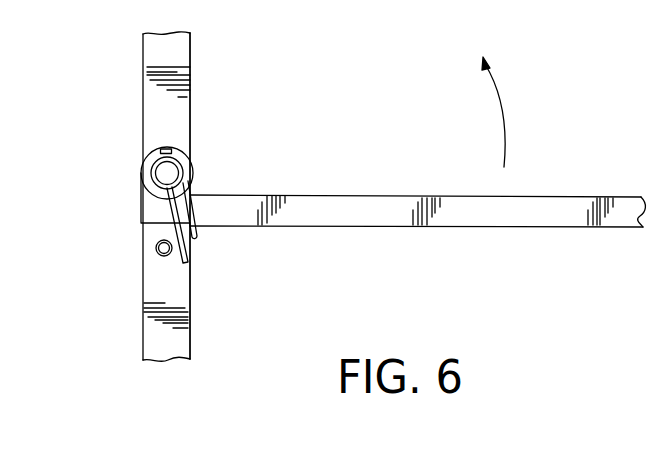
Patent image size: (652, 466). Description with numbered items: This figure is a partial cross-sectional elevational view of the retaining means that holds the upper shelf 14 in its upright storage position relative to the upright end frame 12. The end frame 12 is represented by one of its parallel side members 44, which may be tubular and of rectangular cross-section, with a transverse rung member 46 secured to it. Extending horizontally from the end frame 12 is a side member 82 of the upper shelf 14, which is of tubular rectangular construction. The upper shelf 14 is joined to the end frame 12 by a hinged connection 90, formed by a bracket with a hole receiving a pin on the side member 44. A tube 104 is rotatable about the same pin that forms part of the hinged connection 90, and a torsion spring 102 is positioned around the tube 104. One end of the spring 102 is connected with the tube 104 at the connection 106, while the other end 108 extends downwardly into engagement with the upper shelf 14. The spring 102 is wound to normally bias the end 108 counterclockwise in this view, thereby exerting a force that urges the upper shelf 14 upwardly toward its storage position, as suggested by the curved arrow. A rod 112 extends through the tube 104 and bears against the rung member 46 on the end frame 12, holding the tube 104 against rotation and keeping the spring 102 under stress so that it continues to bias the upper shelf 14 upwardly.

The upright end frame 12 is at (199, 104).
The upper shelf 14 is at (536, 193).
The side member 44 is at (191, 68).
The rung member 46 is at (157, 255).
The side member 82 is at (580, 197).
The hinged connection 90 is at (145, 198).
The torsion spring 102 is at (185, 171).
The tube 104 is at (142, 174).
The spring end connection 106 is at (165, 147).
The spring end 108 is at (197, 240).
The rod 112 is at (170, 222).